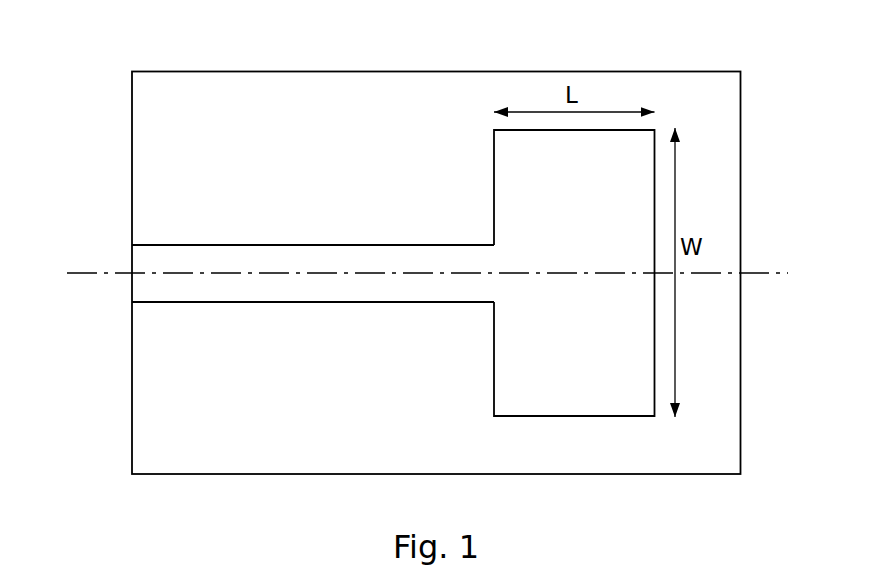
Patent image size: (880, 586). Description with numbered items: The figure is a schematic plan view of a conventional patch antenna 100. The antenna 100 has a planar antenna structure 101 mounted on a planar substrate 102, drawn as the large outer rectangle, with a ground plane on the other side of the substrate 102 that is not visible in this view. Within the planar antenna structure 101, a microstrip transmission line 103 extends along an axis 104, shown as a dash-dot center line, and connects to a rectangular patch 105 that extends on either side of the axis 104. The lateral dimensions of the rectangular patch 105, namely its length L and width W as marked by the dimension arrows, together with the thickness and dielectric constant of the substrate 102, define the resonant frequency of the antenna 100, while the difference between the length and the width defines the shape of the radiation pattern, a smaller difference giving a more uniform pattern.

The patch antenna 100 is at (397, 250).
The planar antenna structure 101 is at (393, 266).
The planar substrate 102 is at (436, 273).
The microstrip transmission line 103 is at (210, 245).
The axis 104 is at (110, 273).
The rectangular patch 105 is at (493, 170).